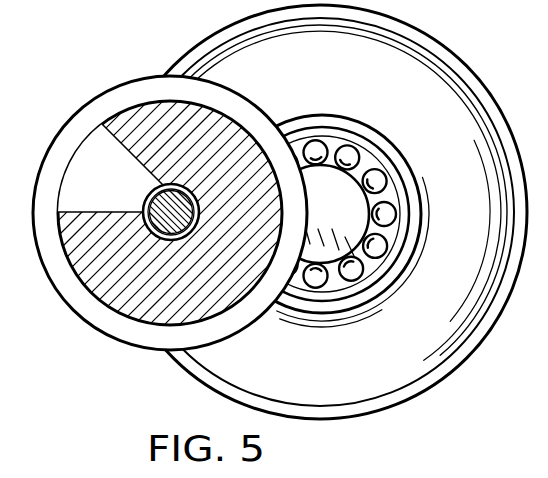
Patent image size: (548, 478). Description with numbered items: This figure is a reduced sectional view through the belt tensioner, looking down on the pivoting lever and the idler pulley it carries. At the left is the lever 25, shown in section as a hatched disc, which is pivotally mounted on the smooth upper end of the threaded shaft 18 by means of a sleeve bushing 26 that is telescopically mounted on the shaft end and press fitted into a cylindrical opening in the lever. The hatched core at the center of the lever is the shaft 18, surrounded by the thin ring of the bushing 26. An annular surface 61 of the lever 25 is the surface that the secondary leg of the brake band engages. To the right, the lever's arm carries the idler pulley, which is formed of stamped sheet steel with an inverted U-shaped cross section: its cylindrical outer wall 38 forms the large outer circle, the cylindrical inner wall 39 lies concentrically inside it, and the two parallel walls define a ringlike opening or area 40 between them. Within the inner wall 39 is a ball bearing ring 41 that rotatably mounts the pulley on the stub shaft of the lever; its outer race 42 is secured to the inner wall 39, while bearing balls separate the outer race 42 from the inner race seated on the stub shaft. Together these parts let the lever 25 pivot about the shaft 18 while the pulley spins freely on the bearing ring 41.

The threaded shaft 18 is at (146, 207).
The lever 25 is at (127, 322).
The sleeve bushing 26 is at (153, 178).
The cylindrical outer wall 38 is at (455, 368).
The cylindrical inner wall 39 is at (419, 228).
The ringlike opening 40 is at (400, 391).
The ball bearing ring 41 is at (370, 279).
The outer race 42 is at (383, 162).
The annular surface 61 is at (133, 101).